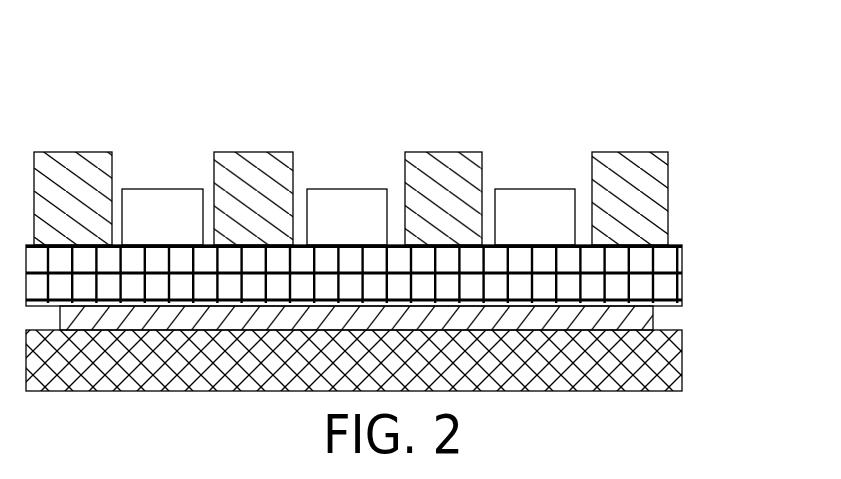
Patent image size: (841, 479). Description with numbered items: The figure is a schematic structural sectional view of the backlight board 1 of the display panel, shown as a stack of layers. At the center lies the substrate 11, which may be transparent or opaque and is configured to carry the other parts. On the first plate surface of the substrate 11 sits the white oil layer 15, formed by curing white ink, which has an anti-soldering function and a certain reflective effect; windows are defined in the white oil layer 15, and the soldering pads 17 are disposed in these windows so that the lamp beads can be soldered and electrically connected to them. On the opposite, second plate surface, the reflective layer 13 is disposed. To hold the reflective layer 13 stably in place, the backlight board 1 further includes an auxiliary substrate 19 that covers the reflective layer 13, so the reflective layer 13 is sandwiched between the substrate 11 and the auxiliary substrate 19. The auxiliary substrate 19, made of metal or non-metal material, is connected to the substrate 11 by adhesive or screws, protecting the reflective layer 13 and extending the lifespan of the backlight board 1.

The backlight board 1 is at (115, 98).
The substrate 11 is at (683, 258).
The reflective layer 13 is at (655, 318).
The white oil layer 15 is at (614, 152).
The soldering pads 17 is at (522, 190).
The auxiliary substrate 19 is at (682, 363).